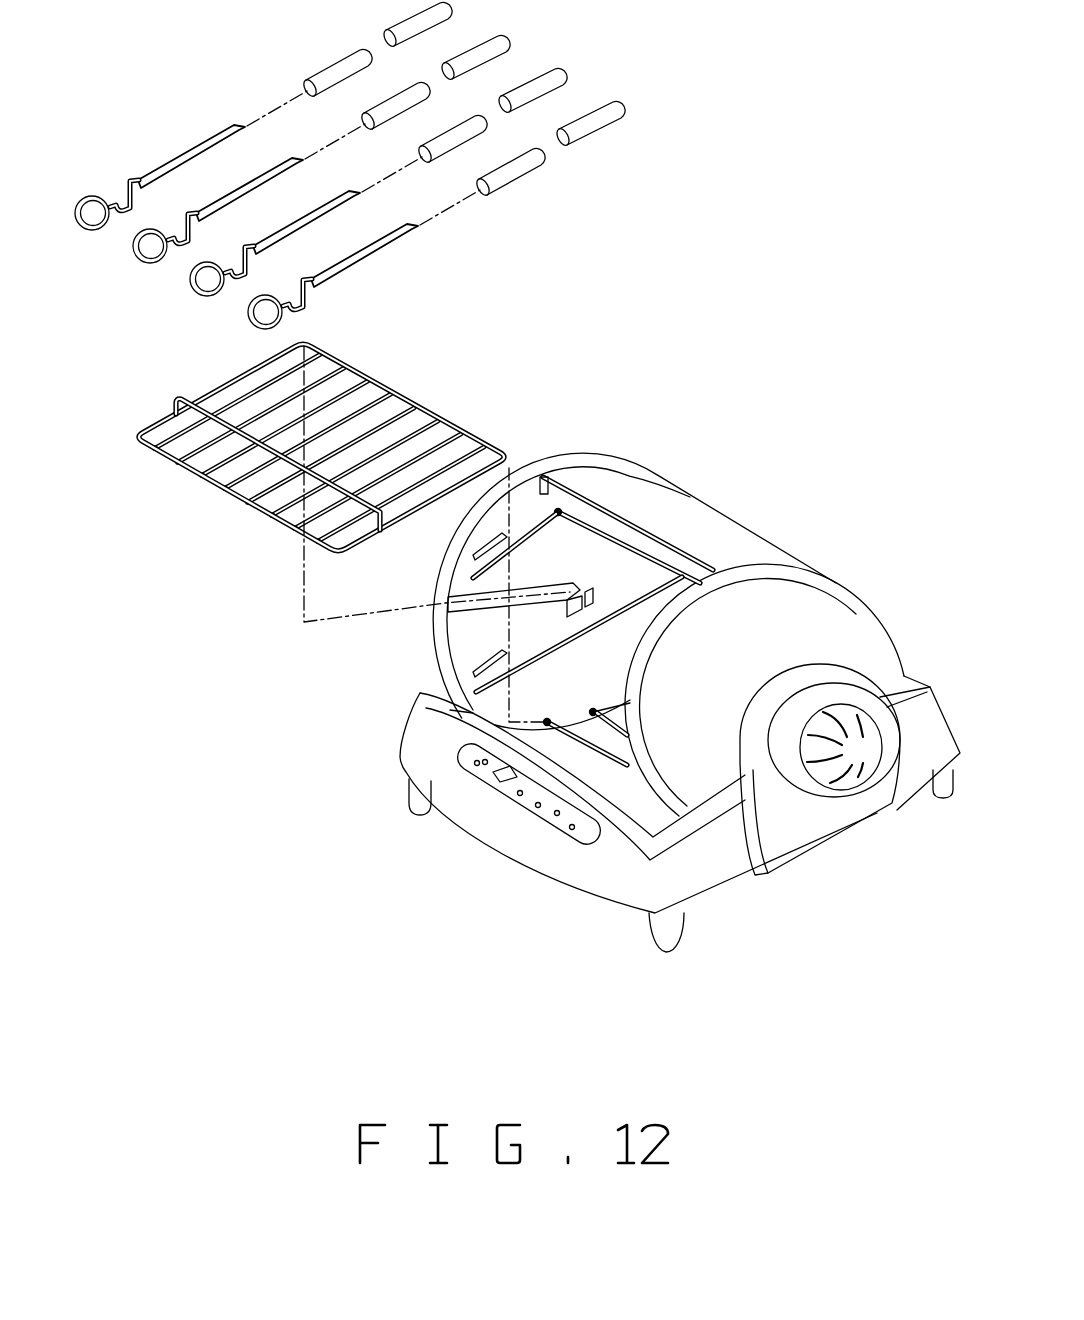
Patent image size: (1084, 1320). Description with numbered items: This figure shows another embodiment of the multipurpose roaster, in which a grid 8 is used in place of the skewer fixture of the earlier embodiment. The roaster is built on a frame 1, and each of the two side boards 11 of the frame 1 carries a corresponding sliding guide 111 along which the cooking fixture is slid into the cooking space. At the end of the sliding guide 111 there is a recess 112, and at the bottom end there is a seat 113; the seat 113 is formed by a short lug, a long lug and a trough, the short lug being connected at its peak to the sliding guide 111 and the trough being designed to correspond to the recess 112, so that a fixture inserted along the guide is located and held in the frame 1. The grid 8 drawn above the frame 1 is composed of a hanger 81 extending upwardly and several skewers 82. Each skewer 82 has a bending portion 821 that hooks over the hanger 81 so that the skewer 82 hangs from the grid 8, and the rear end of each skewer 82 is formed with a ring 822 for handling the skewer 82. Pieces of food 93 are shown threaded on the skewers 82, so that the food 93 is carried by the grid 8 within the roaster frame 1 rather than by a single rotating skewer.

The frame 1 is at (787, 843).
The side board 11 is at (520, 520).
The sliding guide 111 is at (502, 600).
The recess 112 is at (578, 583).
The seat 113 is at (595, 597).
The grid 8 is at (354, 483).
The hanger 81 is at (303, 477).
The skewer 82 is at (288, 220).
The bending portion 821 is at (313, 290).
The ring 822 is at (278, 326).
The food pieces 93 is at (590, 130).